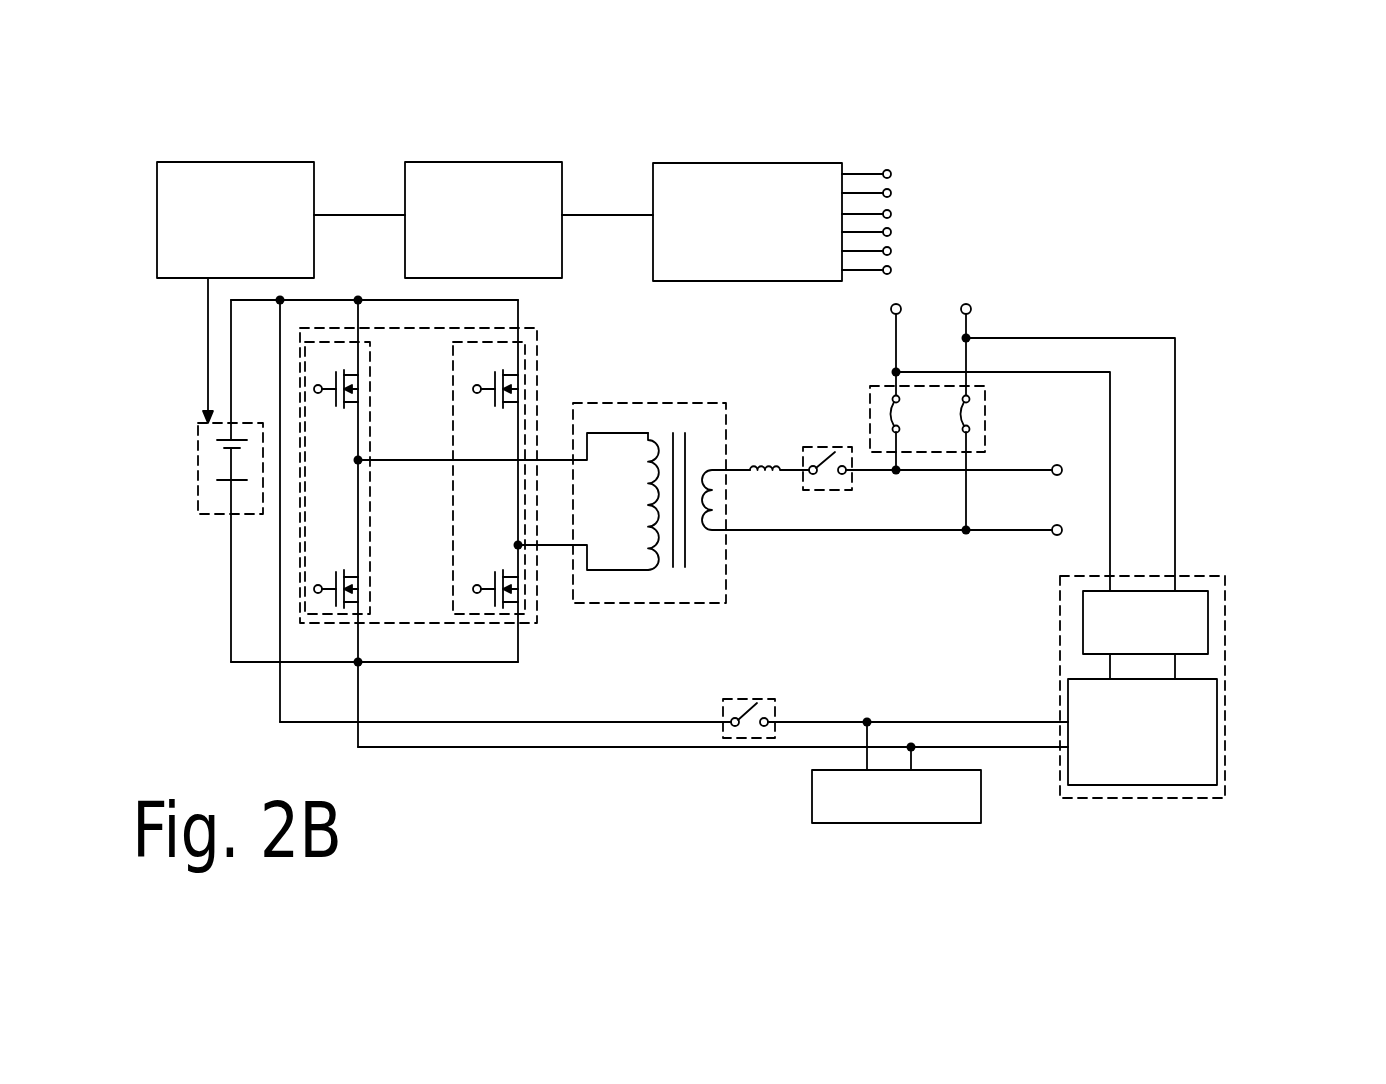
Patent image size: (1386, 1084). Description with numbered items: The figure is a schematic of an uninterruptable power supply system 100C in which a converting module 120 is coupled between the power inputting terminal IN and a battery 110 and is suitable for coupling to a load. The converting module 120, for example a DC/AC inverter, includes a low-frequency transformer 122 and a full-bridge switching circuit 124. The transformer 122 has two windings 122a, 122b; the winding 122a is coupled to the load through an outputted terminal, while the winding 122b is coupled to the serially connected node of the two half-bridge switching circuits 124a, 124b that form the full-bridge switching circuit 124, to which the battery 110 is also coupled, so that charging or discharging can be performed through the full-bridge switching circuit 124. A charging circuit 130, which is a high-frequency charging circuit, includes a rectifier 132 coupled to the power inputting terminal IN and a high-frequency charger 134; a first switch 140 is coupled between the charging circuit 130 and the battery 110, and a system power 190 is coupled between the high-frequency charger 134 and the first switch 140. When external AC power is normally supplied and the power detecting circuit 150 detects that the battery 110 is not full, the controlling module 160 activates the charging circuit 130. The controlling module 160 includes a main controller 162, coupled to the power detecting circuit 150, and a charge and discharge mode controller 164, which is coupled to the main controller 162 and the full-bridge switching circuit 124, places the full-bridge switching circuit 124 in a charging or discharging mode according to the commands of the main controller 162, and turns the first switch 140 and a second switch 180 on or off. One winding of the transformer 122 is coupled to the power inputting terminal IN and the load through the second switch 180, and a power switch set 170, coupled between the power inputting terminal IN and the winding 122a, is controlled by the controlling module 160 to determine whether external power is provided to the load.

The uninterruptable power supply system 100C is at (607, 814).
The battery 110 is at (200, 488).
The converting module 120 is at (1104, 150).
The transformer 122 is at (812, 474).
The winding 122a is at (727, 528).
The winding 122b is at (652, 562).
The full-bridge switching circuit 124 is at (543, 357).
The half-bridge switching circuit 124a is at (318, 615).
The half-bridge switching circuit 124b is at (473, 608).
The charging circuit 130 is at (1198, 674).
The rectifier 132 is at (1209, 640).
The high-frequency charger 134 is at (1217, 746).
The first switch 140 is at (777, 705).
The power detecting circuit 150 is at (315, 190).
The controlling module 160 is at (1104, 235).
The main controller 162 is at (563, 190).
The charge and discharge mode controller 164 is at (750, 281).
The power switch set 170 is at (995, 420).
The second switch 180 is at (823, 447).
The system power 190 is at (810, 807).